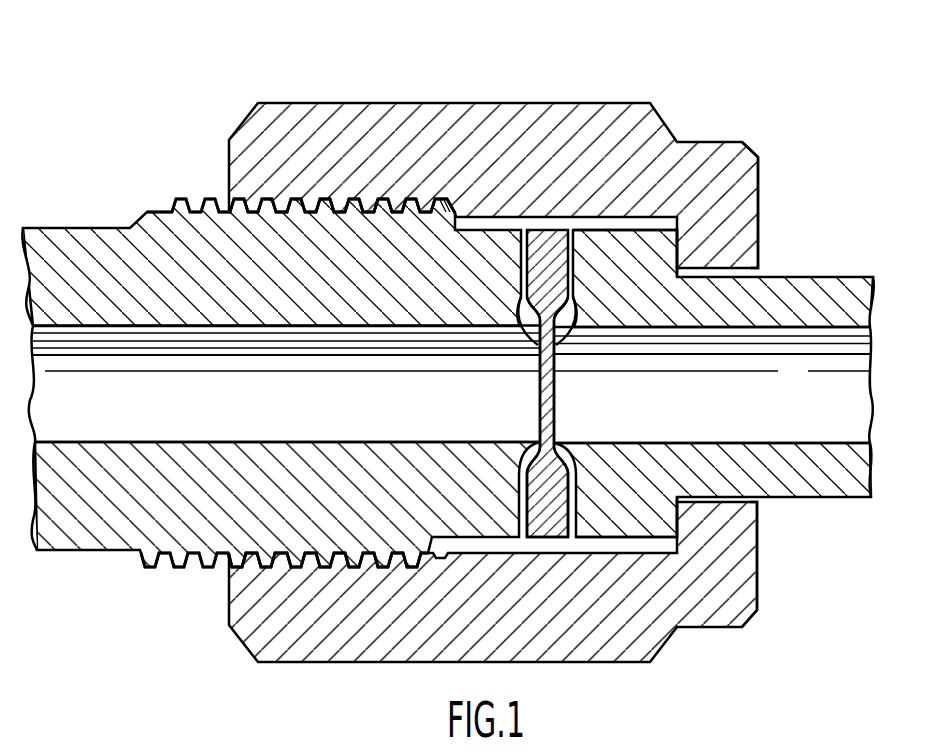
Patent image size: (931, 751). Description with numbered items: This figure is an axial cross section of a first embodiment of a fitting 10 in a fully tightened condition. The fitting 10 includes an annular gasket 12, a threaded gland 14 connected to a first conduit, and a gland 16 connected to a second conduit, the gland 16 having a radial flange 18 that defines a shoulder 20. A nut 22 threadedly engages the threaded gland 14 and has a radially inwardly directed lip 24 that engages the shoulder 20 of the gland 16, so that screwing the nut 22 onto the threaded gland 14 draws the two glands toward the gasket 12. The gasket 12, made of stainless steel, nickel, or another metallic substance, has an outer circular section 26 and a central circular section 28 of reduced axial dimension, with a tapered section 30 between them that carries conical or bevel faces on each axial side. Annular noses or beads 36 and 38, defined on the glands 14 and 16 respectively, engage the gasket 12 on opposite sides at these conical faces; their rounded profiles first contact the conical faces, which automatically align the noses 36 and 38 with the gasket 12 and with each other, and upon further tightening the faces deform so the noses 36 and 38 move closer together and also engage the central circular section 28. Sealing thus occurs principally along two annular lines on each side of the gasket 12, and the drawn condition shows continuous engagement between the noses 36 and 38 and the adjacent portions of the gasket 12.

The fitting 10 is at (207, 52).
The annular gasket 12 is at (508, 287).
The threaded gland 14 is at (85, 243).
The gland 16 is at (720, 308).
The radial flange 18 is at (653, 237).
The shoulder 20 is at (700, 488).
The nut 22 is at (526, 350).
The radially inwardly directed lip 24 is at (760, 223).
The outer circular section 26 is at (530, 513).
The central circular section 28 is at (550, 433).
The tapered section 30 is at (550, 457).
The annular nose 36 is at (528, 322).
The annular nose 38 is at (567, 322).